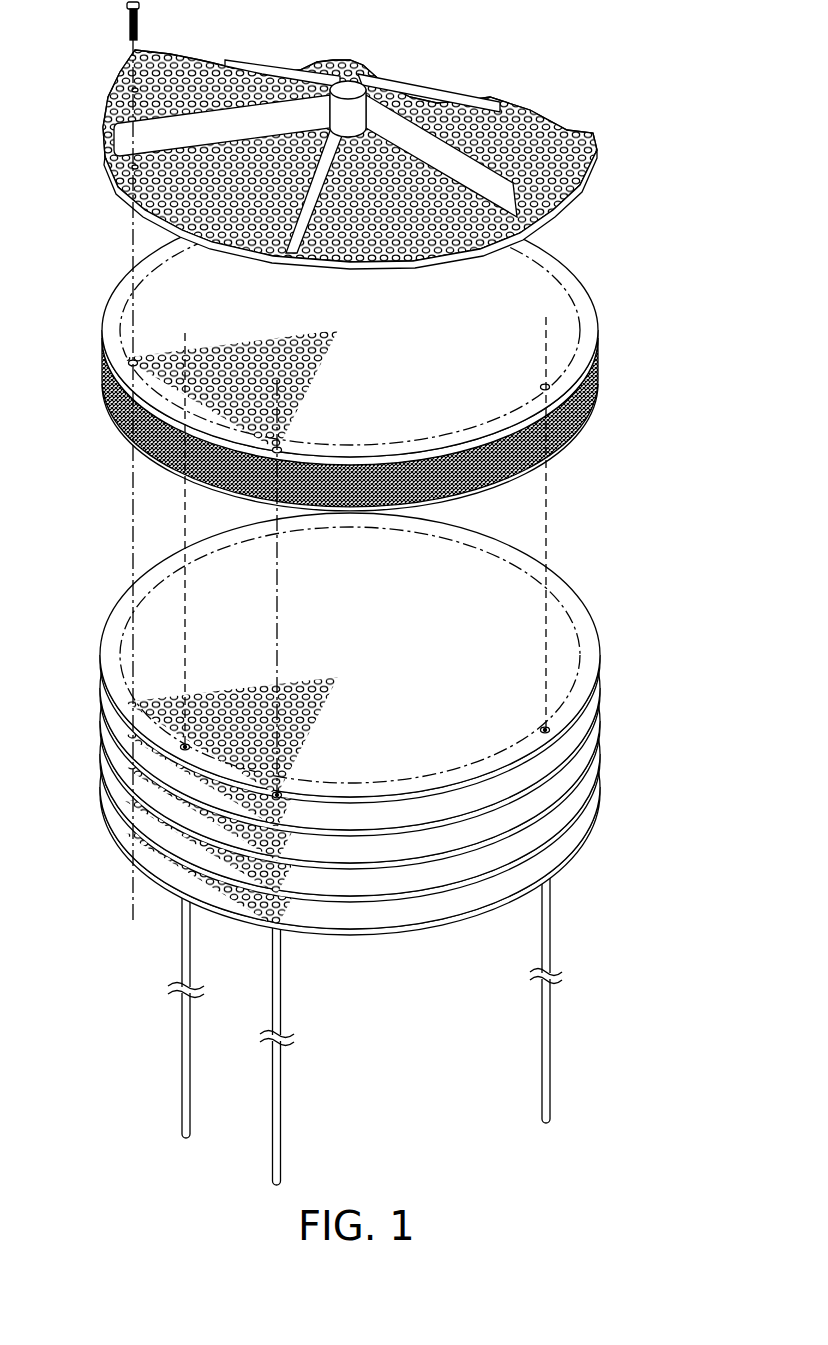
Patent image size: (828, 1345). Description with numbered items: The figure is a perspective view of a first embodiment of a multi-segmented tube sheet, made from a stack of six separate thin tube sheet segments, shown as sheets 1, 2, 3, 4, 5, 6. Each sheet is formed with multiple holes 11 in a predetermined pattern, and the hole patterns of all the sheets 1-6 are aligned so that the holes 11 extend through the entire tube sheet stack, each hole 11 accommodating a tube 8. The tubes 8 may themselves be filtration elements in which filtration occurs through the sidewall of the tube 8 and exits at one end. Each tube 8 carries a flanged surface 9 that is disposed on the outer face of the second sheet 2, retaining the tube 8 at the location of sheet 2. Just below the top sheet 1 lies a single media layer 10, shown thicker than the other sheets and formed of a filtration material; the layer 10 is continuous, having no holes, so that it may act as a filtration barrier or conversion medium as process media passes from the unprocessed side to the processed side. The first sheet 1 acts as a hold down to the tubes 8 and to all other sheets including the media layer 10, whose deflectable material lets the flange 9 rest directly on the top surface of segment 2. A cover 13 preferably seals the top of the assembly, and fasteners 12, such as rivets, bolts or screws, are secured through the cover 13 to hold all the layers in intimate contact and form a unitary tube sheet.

The top sheet 1 is at (581, 283).
The second sheet 2 is at (580, 633).
The tube sheet segment 3 is at (598, 697).
The tube sheet segment 4 is at (598, 730).
The tube sheet segment 5 is at (598, 760).
The tube sheet segment 6 is at (598, 790).
The tube 8 is at (547, 922).
The flanged surface 9 is at (547, 728).
The media layer 10 is at (598, 370).
The holes 11 is at (520, 120).
The fastener 12 is at (128, 14).
The cover 13 is at (610, 135).